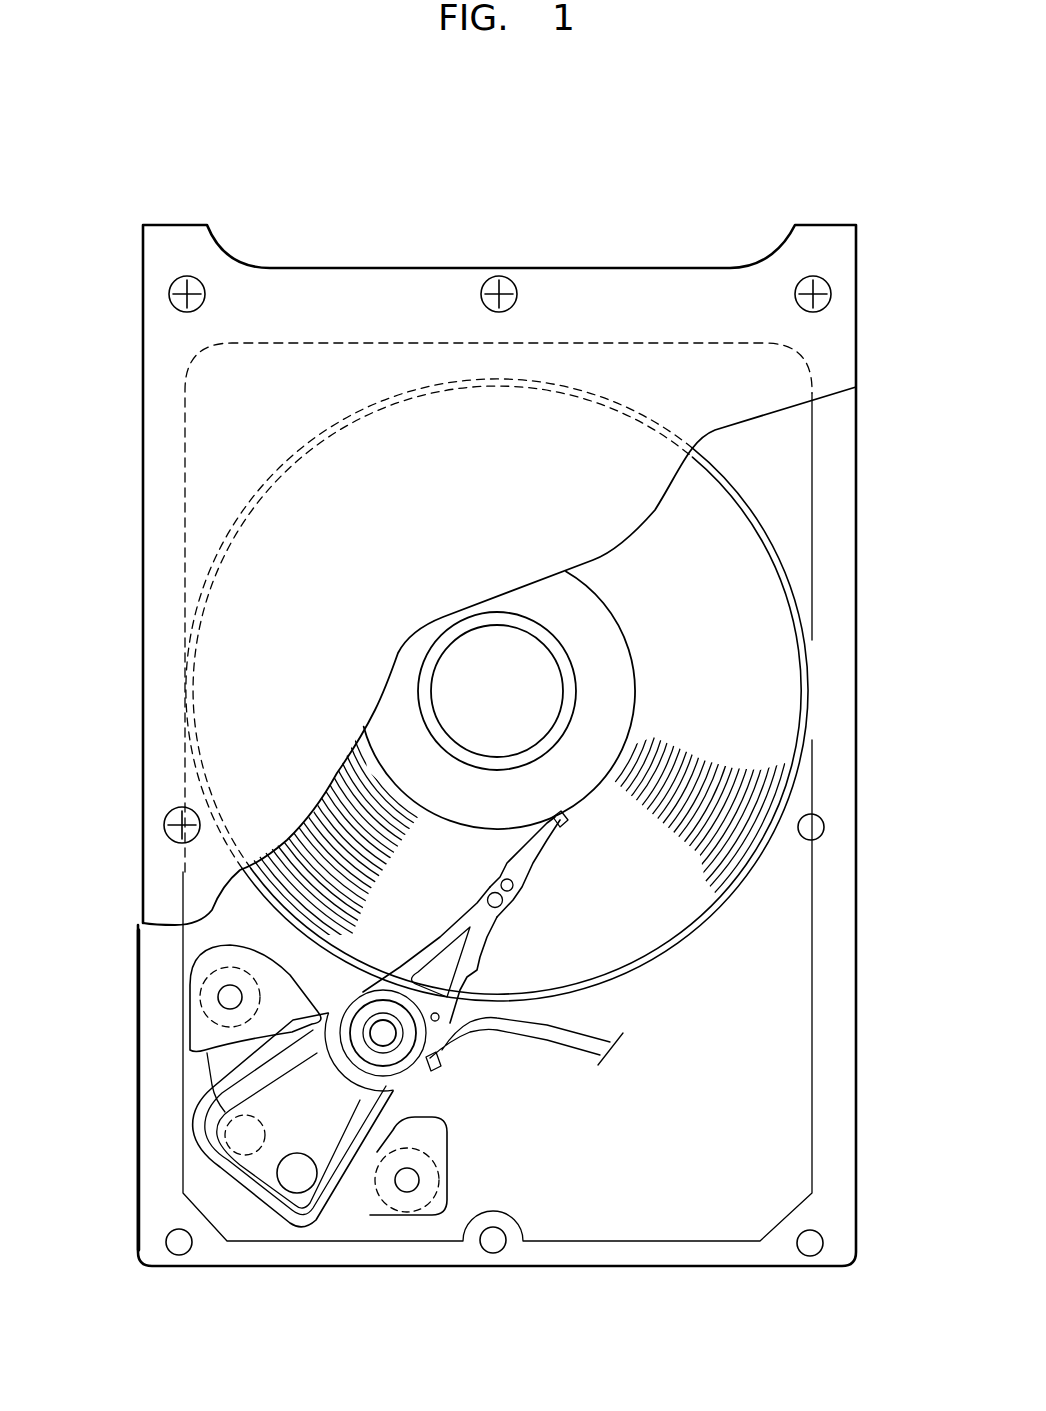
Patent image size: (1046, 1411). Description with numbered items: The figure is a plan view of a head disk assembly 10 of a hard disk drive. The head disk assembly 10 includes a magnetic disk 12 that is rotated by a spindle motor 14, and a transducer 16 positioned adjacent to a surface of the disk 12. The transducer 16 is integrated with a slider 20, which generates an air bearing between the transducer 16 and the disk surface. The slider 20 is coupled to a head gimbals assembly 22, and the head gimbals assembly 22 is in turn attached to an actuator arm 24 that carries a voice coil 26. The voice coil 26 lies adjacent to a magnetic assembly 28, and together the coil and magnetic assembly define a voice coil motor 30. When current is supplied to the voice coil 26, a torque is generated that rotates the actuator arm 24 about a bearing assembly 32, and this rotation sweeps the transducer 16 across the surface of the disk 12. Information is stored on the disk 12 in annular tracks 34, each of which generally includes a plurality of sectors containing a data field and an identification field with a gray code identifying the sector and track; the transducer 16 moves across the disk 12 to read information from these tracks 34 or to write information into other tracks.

The head disk assembly 10 is at (684, 202).
The magnetic disk 12 is at (772, 618).
The spindle motor 14 is at (472, 665).
The transducer 16 is at (565, 828).
The slider 20 is at (492, 966).
The head gimbals assembly 22 is at (535, 853).
The actuator arm 24 is at (293, 1053).
The voice coil 26 is at (217, 1123).
The magnetic assembly 28 is at (232, 1068).
The voice coil motor 30 is at (353, 1197).
The bearing assembly 32 is at (400, 1050).
The tracks 34 is at (315, 847).